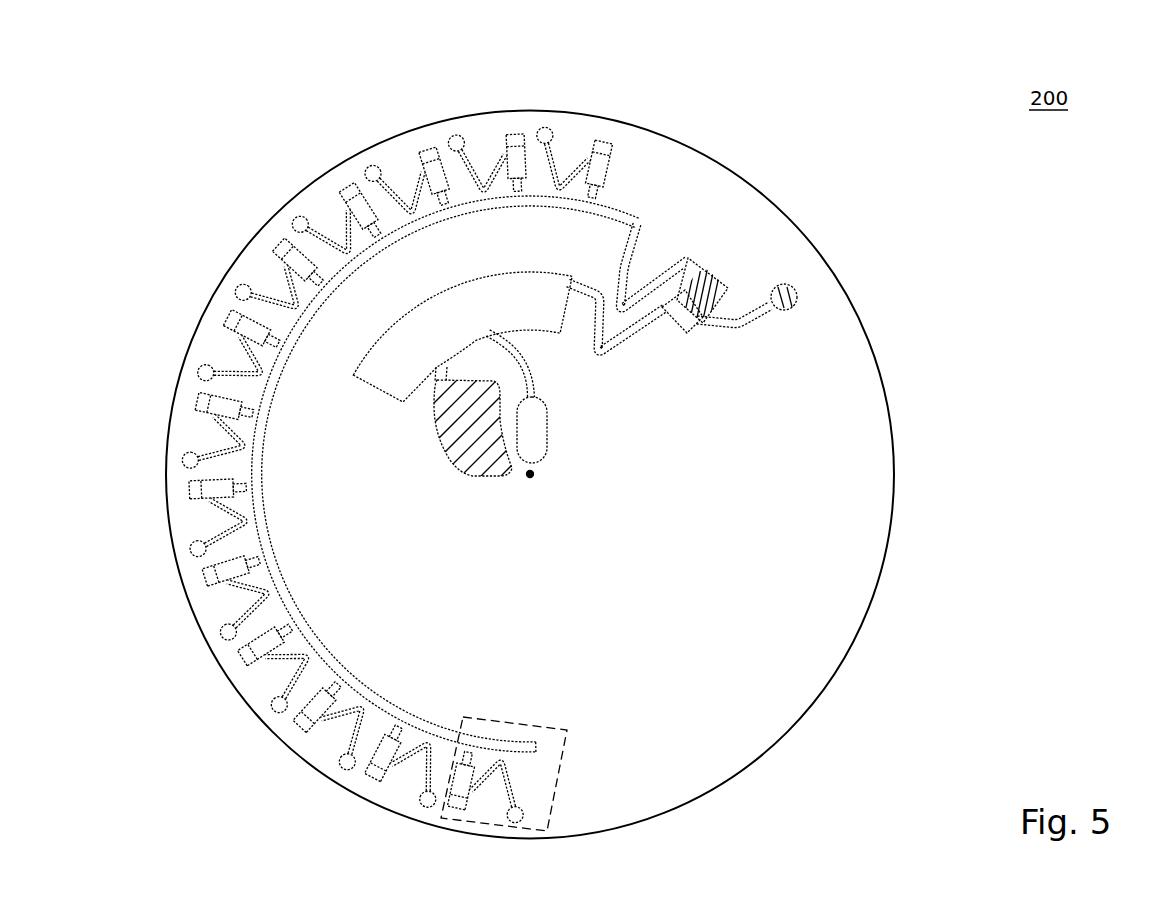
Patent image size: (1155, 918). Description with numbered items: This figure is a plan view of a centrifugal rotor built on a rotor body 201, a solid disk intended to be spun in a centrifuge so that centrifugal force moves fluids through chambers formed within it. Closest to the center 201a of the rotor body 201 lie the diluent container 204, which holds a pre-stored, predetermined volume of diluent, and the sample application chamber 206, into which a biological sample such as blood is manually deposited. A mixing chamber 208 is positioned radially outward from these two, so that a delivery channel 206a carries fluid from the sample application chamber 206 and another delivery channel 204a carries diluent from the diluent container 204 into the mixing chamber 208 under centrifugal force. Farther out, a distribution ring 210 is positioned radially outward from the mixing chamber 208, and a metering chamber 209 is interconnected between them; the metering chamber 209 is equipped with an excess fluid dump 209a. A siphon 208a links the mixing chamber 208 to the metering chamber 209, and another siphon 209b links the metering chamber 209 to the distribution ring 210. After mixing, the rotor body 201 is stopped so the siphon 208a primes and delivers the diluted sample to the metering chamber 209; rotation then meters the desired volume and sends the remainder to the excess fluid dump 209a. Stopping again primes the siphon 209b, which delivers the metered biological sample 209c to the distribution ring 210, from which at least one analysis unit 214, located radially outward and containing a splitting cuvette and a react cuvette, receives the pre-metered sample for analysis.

The rotor body 201 is at (848, 397).
The center 201a is at (534, 477).
The diluent container 204 is at (460, 445).
The delivery channel 204a is at (437, 366).
The sample application chamber 206 is at (537, 433).
The delivery channel 206a is at (535, 373).
The mixing chamber 208 is at (437, 327).
The siphon 208a is at (588, 292).
The metering chamber 209 is at (781, 212).
The excess fluid dump 209a is at (797, 297).
The siphon 209b is at (630, 258).
The metered biological sample 209c is at (720, 300).
The distribution ring 210 is at (308, 658).
The analysis unit 214 is at (553, 793).